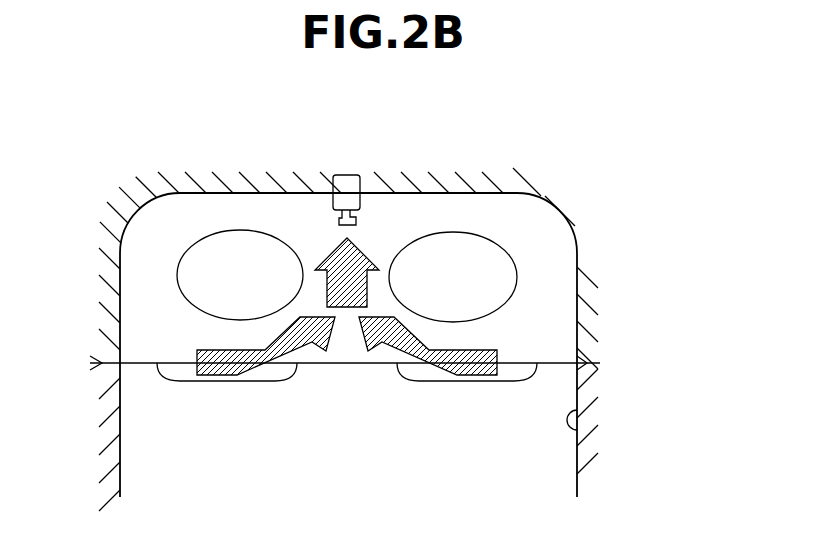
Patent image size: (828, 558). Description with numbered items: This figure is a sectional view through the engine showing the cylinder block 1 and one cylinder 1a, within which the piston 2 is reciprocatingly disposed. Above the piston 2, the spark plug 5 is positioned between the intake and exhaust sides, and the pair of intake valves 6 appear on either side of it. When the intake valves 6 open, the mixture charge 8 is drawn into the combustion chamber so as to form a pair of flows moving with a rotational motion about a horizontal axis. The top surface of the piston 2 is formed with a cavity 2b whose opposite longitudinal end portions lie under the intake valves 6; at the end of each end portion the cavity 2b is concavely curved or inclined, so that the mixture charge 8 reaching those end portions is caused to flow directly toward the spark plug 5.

The cylinder block 1 is at (594, 386).
The cylinder 1a is at (577, 430).
The piston 2 is at (578, 467).
The cavity 2b is at (172, 376).
The spark plug 5 is at (347, 185).
The intake valve 6 is at (240, 258).
The mixture charge 8 is at (312, 345).